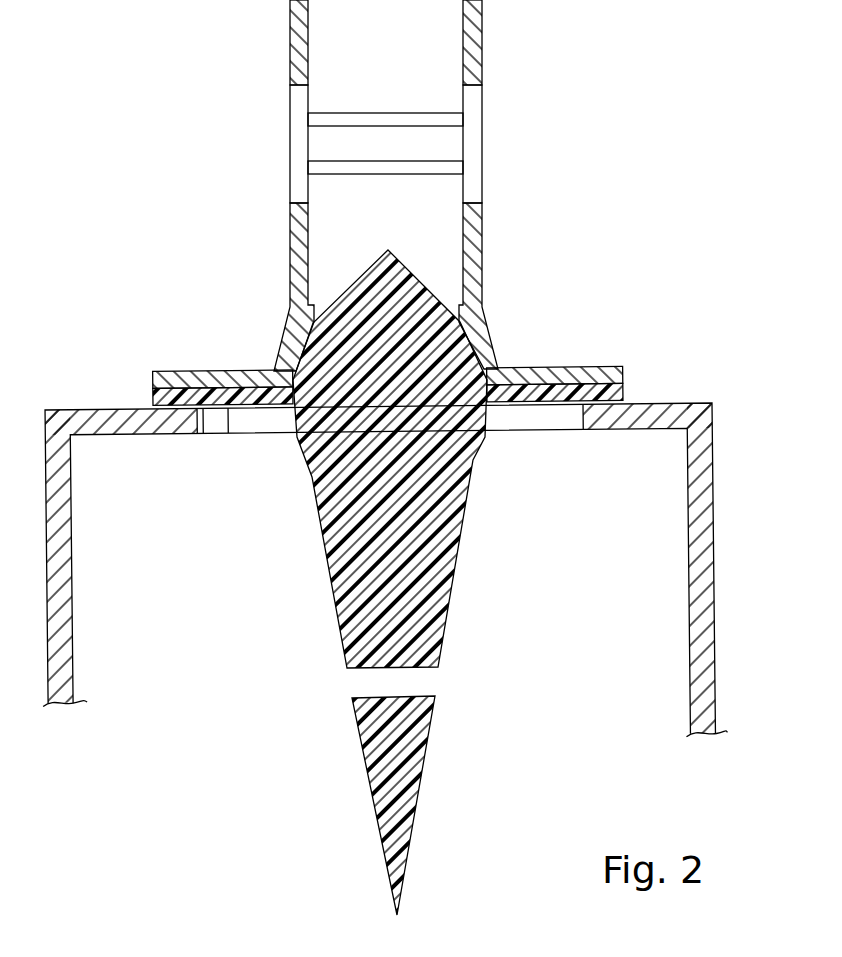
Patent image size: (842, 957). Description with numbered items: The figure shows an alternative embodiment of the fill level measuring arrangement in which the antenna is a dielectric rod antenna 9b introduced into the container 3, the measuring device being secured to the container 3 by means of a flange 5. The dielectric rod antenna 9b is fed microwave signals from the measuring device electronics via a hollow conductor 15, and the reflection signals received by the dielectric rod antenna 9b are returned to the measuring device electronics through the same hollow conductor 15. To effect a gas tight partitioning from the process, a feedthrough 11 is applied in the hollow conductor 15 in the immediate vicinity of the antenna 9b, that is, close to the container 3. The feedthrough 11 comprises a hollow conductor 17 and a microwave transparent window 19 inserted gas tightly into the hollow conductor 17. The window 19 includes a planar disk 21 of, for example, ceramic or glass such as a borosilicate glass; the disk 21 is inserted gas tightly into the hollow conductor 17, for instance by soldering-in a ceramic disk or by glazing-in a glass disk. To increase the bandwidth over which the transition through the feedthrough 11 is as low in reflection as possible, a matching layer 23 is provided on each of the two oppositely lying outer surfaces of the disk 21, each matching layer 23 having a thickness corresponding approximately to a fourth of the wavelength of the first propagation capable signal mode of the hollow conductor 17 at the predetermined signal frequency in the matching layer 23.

The container 3 is at (677, 410).
The flange 5 is at (182, 372).
The dielectric rod antenna 9b is at (443, 548).
The feedthrough 11 is at (394, 185).
The hollow conductor 15 is at (290, 41).
The hollow conductor 17 is at (300, 137).
The microwave transparent window 19 is at (345, 90).
The disk 21 is at (384, 140).
The matching layer 23 is at (427, 118).